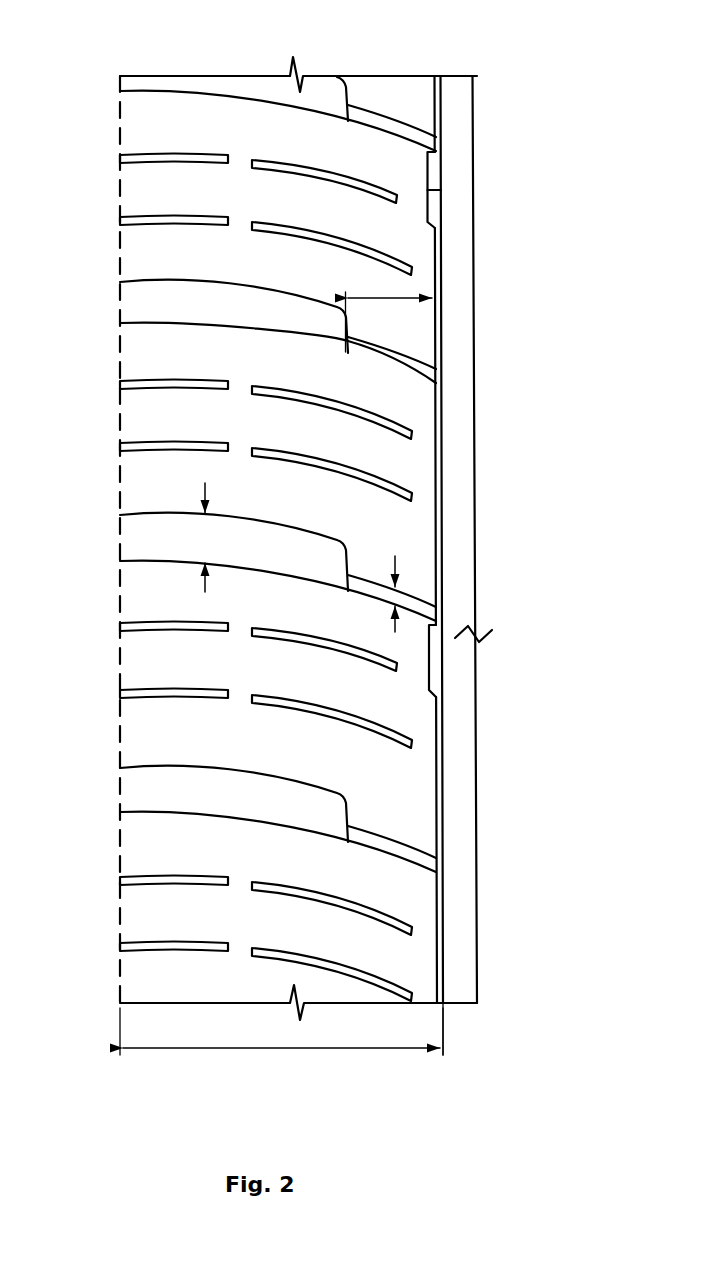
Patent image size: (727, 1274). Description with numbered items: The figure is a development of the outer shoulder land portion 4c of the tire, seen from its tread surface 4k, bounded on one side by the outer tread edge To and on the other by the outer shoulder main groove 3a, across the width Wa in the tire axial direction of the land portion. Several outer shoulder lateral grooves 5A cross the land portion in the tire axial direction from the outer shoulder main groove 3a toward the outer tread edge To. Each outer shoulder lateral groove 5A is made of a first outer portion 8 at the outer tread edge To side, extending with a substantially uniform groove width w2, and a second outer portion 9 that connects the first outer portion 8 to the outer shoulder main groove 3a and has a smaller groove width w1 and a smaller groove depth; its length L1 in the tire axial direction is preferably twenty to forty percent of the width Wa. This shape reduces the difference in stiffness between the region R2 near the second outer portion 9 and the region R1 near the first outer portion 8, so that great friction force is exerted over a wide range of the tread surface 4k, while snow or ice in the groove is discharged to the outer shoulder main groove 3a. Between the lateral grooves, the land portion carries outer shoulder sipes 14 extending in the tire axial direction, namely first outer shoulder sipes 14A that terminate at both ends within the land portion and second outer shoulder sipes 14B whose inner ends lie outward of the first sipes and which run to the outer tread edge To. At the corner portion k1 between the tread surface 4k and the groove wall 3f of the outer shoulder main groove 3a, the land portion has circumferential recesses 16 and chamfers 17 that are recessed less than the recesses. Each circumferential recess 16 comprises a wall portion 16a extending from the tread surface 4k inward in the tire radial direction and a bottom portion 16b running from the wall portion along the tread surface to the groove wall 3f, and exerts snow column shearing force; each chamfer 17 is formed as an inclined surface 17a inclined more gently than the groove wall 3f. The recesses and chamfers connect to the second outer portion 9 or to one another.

The outer tread edge To is at (118, 102).
The outer shoulder main groove 3a is at (457, 108).
The groove wall 3f is at (445, 962).
The outer shoulder land portion 4c is at (278, 150).
The tread surface 4k is at (240, 130).
The outer shoulder lateral groove 5A is at (223, 365).
The first outer portion 8 is at (215, 306).
The second outer portion 9 is at (397, 360).
The outer shoulder sipe 14 is at (431, 714).
The first outer shoulder sipe 14A is at (343, 717).
The second outer shoulder sipe 14B is at (178, 690).
The circumferential recess 16 is at (494, 196).
The wall portion 16a is at (441, 190).
The bottom portion 16b is at (433, 211).
The chamfer 17 is at (522, 539).
The inclined surface 17a is at (439, 332).
The region near the first outer portion R1 is at (176, 258).
The region near the second outer portion R2 is at (408, 399).
The length in the tire axial direction of the second outer portion L1 is at (396, 297).
The corner portion k1 is at (446, 460).
The groove width of the second outer portion w1 is at (400, 596).
The groove width of the first outer portion w2 is at (205, 537).
The width in the tire axial direction of the outer shoulder land portion Wa is at (281, 1044).